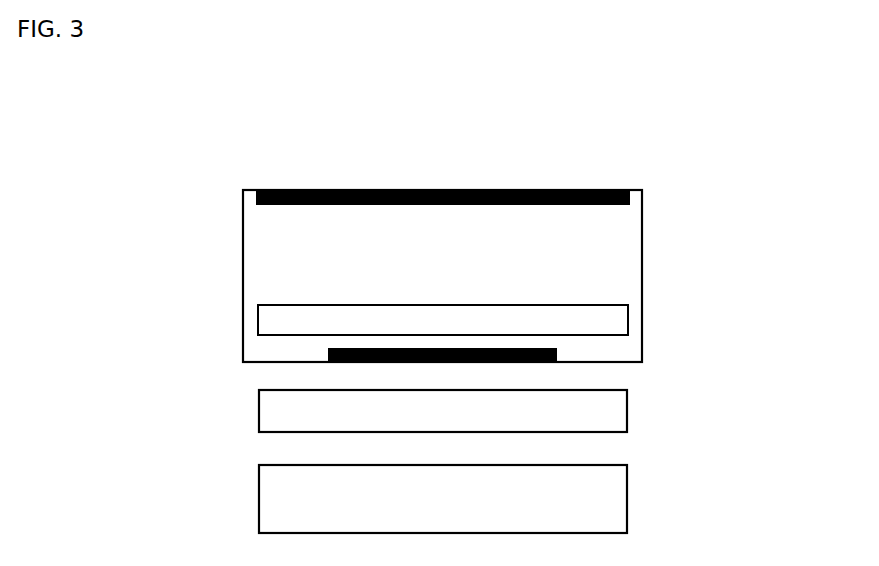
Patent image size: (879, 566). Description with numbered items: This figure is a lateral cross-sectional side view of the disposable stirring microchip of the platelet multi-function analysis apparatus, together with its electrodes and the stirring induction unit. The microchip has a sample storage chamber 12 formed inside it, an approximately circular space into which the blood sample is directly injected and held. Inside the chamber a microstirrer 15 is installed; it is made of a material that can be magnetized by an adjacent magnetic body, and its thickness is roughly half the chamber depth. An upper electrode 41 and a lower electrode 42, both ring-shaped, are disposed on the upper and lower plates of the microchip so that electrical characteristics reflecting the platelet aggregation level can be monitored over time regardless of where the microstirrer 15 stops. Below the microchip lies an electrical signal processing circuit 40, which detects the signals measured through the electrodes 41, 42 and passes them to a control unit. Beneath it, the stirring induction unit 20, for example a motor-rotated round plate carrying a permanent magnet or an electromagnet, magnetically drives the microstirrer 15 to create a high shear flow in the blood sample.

The sample storage chamber 12 is at (618, 250).
The microstirrer 15 is at (614, 322).
The stirring induction unit 20 is at (610, 500).
The electrical signal processing circuit 40 is at (268, 413).
The upper electrode 41 is at (323, 190).
The lower electrode 42 is at (373, 350).